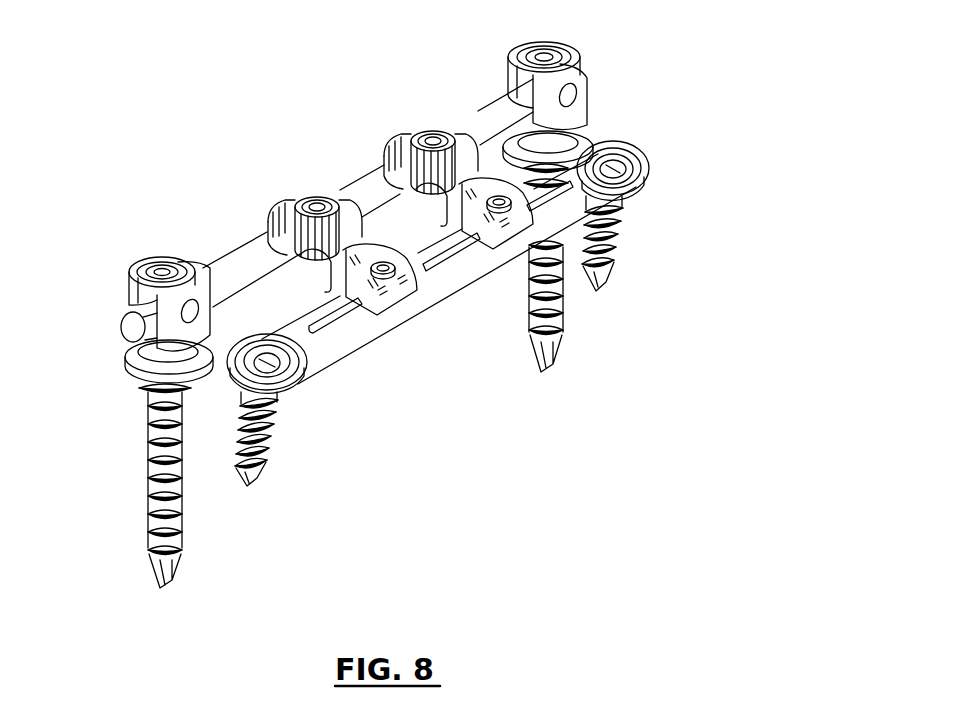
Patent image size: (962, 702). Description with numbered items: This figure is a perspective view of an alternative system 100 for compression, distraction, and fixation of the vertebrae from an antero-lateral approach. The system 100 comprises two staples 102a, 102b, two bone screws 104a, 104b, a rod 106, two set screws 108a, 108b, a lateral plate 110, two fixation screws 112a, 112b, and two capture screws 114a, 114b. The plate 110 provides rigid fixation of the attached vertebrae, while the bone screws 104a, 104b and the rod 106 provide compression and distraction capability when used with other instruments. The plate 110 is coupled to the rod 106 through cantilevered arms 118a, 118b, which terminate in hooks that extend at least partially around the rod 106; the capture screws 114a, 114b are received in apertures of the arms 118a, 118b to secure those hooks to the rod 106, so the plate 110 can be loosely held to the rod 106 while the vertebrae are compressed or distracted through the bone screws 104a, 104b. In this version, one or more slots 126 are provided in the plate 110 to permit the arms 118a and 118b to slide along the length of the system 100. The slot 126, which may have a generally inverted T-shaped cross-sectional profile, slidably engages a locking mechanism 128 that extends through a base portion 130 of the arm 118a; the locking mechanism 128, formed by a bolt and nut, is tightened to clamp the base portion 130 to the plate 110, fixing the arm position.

The system 100 is at (216, 105).
The staple 102a is at (125, 328).
The staple 102b is at (590, 128).
The bone screw 104a is at (150, 465).
The bone screw 104b is at (510, 92).
The rod 106 is at (369, 186).
The set screw 108a is at (148, 262).
The set screw 108b is at (561, 44).
The lateral plate 110 is at (370, 342).
The fixation screw 112a is at (268, 448).
The fixation screw 112b is at (620, 244).
The capture screw 114a is at (290, 200).
The capture screw 114b is at (408, 126).
The cantilevered arm 118a is at (331, 268).
The cantilevered arm 118b is at (461, 200).
The slot 126 is at (472, 242).
The locking mechanism 128 is at (404, 279).
The base portion 130 is at (386, 293).